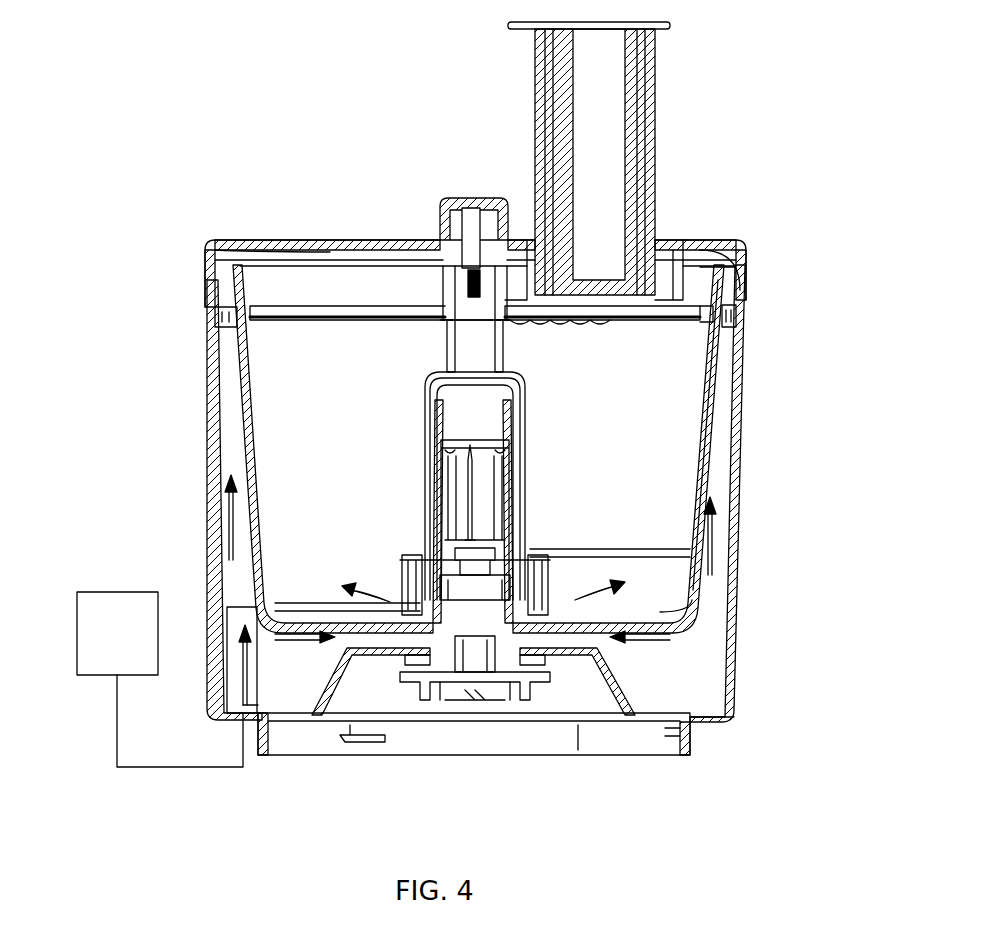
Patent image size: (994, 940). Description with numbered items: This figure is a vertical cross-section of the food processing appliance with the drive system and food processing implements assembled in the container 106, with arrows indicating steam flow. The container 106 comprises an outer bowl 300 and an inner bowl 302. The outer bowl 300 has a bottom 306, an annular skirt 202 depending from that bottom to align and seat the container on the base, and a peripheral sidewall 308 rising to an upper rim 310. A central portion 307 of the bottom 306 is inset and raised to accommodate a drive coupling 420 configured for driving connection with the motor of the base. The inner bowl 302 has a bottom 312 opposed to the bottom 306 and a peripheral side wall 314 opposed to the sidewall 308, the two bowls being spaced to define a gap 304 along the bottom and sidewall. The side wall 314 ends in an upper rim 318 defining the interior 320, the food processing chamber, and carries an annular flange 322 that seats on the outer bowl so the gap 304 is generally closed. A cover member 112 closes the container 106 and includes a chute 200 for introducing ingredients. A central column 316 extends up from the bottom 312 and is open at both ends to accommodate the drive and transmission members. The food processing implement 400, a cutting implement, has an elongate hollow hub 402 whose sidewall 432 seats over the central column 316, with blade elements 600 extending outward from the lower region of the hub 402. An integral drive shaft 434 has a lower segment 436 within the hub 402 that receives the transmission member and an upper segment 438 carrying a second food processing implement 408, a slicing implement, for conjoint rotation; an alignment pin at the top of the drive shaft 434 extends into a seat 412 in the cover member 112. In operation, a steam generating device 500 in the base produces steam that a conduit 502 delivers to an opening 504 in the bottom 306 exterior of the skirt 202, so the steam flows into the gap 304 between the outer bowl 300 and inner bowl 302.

The chute 200 is at (655, 78).
The cover member 112 is at (250, 242).
The second food processing implement 408 is at (325, 306).
The seat 412 is at (470, 210).
The upper rim 318 is at (740, 248).
The upper rim 310 is at (742, 282).
The annular flange 322 is at (738, 322).
The container 106 is at (745, 380).
The interior 320 is at (303, 372).
The drive shaft 434 is at (446, 341).
The upper segment 438 is at (500, 340).
The peripheral side wall 314 is at (222, 380).
The food processing implement 400 is at (427, 400).
The lower segment 436 is at (515, 402).
The hub 402 is at (525, 440).
The sidewall 432 is at (428, 462).
The peripheral sidewall 308 is at (210, 470).
The central column 316 is at (514, 500).
The blade elements 600 is at (130, 567).
The inner bowl 302 is at (745, 505).
The gap 304 is at (245, 617).
The outer bowl 300 is at (735, 600).
The bottom 312 is at (665, 622).
The steam generating device 500 is at (142, 648).
The conduit 502 is at (117, 715).
The bottom 306 is at (735, 712).
The annular skirt 202 is at (690, 748).
The drive coupling 420 is at (500, 700).
The central portion 307 is at (608, 670).
The opening 504 is at (253, 713).